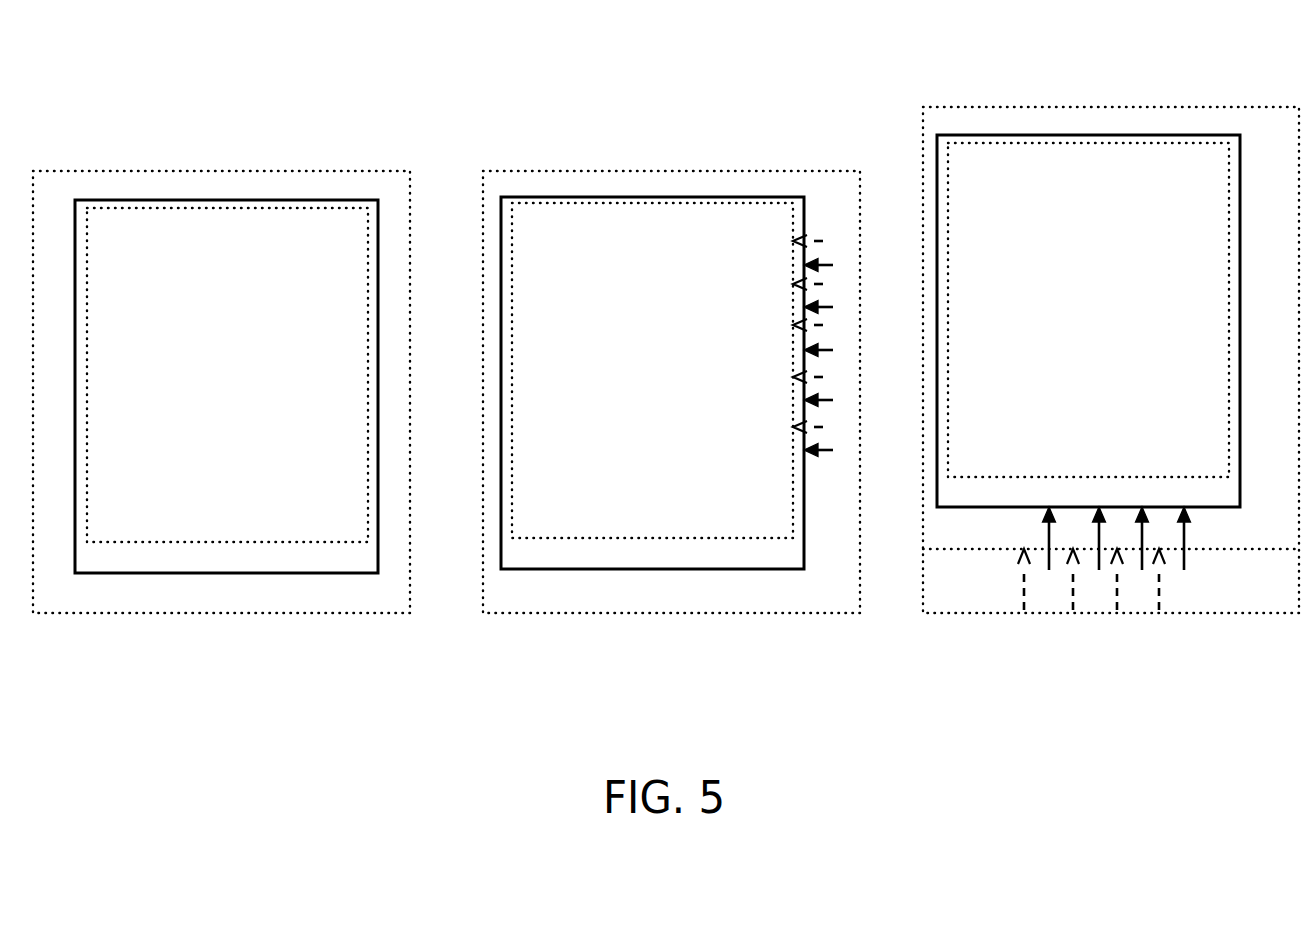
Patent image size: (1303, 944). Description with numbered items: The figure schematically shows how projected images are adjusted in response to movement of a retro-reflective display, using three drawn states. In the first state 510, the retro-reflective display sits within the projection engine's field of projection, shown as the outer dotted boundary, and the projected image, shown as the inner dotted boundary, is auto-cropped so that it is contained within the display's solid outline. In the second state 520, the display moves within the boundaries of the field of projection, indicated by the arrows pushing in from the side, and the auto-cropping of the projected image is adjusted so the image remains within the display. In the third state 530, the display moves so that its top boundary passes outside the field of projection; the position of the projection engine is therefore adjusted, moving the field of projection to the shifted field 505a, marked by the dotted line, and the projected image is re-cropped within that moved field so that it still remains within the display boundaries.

The first state 510 is at (255, 70).
The second state 520 is at (647, 70).
The third state 530 is at (1112, 70).
The moved field of projection 505a is at (1283, 541).